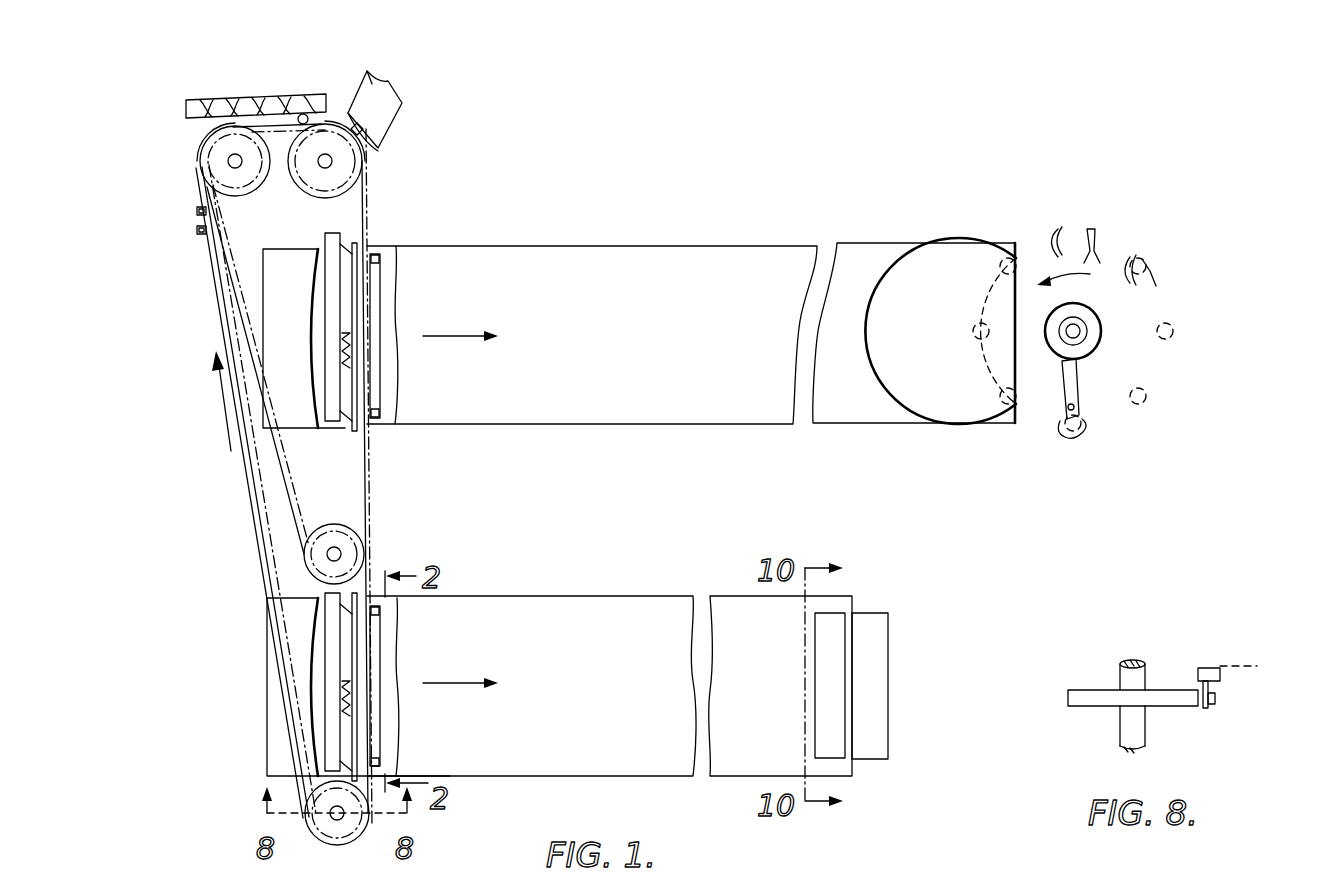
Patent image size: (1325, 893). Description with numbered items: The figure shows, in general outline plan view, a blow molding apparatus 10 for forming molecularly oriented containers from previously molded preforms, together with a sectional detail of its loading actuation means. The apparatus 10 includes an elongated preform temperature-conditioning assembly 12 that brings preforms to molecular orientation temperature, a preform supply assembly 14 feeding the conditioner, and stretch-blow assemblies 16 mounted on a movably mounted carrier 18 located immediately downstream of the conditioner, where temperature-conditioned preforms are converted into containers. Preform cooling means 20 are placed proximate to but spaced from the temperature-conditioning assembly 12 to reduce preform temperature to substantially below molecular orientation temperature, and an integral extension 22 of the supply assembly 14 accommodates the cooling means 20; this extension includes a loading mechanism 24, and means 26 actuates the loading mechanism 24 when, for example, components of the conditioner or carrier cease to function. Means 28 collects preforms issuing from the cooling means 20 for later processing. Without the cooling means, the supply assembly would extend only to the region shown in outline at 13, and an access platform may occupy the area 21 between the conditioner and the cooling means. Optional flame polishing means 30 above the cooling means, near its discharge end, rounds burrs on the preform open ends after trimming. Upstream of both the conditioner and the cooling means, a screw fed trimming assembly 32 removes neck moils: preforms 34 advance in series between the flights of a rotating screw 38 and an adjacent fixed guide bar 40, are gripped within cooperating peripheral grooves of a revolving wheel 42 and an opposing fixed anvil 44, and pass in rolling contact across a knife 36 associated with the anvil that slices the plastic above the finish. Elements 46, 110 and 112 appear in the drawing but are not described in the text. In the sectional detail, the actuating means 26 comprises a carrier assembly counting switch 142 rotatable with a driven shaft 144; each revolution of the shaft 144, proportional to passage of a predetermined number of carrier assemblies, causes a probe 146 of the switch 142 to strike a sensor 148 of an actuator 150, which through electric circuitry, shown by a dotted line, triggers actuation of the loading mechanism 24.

In FIG. 1, the blow molding apparatus 10 is at (976, 173).
In FIG. 1, the preform temperature-conditioning assembly 12 is at (729, 234).
In FIG. 1, the outline of preform supply assembly without cooling means 13 is at (293, 464).
In FIG. 1, the preform supply assembly 14 is at (305, 295).
In FIG. 1, the stretch-blow assemblies 16 is at (1198, 223).
In FIG. 1, the carrier 18 is at (1150, 307).
In FIG. 1, the preform cooling means 20 is at (688, 573).
In FIG. 1, the access platform area 21 is at (630, 493).
In FIG. 1, the extension of preform supply assembly 22 is at (350, 505).
In FIG. 1, the loading mechanism 24 is at (304, 718).
In FIG. 8, the actuating means 26 is at (1278, 738).
In FIG. 1, the collecting means 28 is at (868, 620).
In FIG. 1, the flame polishing means 30 is at (830, 598).
In FIG. 1, the screw fed trimming assembly 32 is at (366, 53).
In FIG. 1, the preforms 34 is at (303, 112).
In FIG. 1, the knife 36 is at (372, 83).
In FIG. 1, the rotating screw 38 is at (205, 100).
In FIG. 1, the fixed guide bar 40 is at (283, 128).
In FIG. 1, the revolving wheel 42 is at (345, 166).
In FIG. 1, the fixed anvil 44 is at (390, 100).
In FIG. 1, the cooler conveyor section 46 is at (480, 594).
In FIG. 1, the drive shaft 110 is at (330, 166).
In FIG. 1, the nozzle mount 112 is at (367, 133).
In FIG. 8, the carrier assembly counting switch 142 is at (1087, 697).
In FIG. 8, the driven shaft 144 is at (1122, 728).
In FIG. 8, the probe 146 is at (1217, 698).
In FIG. 8, the sensor 148 is at (1206, 708).
In FIG. 8, the actuator 150 is at (1208, 666).